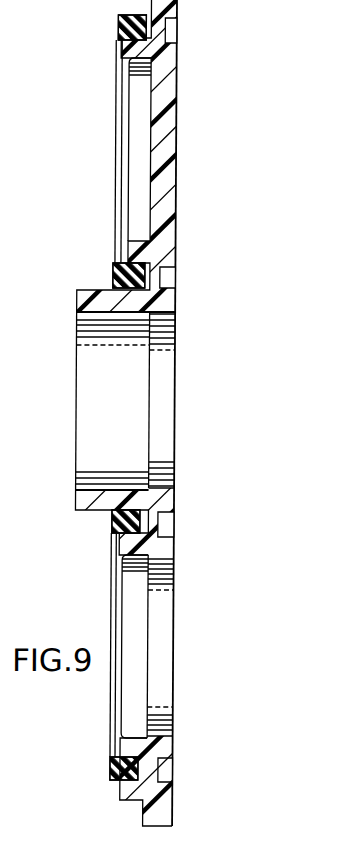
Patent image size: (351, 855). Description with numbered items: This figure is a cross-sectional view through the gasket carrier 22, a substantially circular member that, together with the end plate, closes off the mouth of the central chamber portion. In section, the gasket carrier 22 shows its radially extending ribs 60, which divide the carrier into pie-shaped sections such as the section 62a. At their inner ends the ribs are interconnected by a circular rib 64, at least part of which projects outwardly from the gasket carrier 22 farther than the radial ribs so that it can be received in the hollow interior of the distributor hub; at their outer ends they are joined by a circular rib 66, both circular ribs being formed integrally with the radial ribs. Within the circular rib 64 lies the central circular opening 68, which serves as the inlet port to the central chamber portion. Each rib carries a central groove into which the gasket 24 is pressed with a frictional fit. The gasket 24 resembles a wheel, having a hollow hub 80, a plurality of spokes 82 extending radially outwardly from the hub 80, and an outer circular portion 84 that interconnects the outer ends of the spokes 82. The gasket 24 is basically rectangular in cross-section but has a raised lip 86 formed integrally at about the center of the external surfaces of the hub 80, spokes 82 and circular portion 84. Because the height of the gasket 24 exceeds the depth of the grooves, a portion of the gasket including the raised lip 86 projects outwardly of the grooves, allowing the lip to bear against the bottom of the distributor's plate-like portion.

The gasket carrier 22 is at (176, 138).
The gasket 24 is at (106, 265).
The radially extending ribs 60 is at (135, 187).
The pie-shaped section 62a is at (163, 623).
The circular rib 64 is at (84, 491).
The circular rib 66 is at (121, 792).
The circular opening 68 is at (166, 372).
The hollow hub 80 is at (146, 283).
The spokes 82 is at (119, 144).
The outer circular portion 84 is at (166, 28).
The raised lip 86 is at (113, 77).